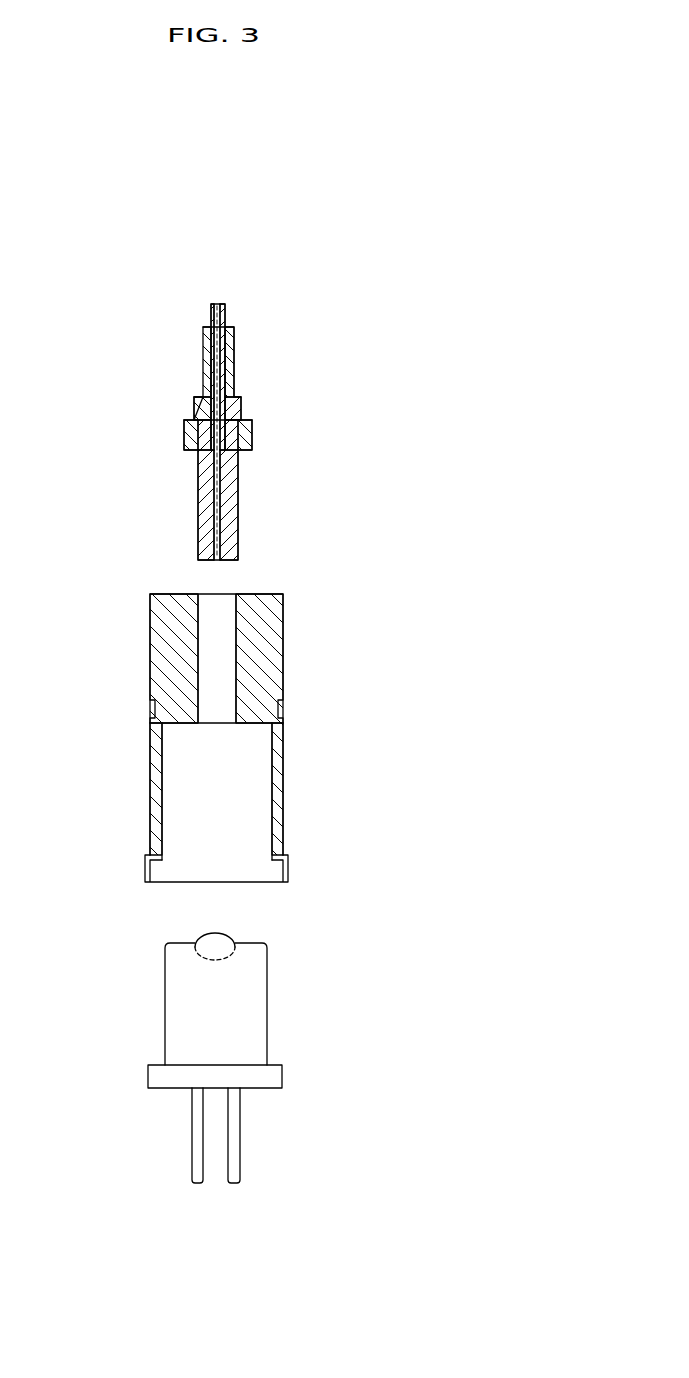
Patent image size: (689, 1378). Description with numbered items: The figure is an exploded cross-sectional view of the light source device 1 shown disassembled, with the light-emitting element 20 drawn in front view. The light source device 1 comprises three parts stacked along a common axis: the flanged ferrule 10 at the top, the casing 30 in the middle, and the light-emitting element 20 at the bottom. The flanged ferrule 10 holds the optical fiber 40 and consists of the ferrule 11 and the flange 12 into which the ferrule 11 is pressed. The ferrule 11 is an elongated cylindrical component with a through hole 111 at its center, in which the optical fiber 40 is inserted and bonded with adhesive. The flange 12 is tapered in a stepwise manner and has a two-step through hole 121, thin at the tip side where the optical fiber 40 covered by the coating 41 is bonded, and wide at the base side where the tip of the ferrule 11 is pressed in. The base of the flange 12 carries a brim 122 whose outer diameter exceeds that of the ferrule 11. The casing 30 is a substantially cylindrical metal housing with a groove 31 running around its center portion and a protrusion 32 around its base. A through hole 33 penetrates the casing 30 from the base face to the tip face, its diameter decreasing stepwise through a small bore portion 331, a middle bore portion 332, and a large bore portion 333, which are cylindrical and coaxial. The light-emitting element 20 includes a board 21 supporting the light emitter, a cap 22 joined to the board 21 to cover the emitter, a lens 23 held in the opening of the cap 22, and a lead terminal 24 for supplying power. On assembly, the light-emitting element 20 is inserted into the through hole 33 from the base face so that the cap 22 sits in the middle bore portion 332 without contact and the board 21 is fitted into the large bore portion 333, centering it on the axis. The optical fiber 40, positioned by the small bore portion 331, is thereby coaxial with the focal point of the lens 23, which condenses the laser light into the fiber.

The light source device 1 is at (377, 298).
The flanged ferrule 10 is at (88, 400).
The ferrule 11 is at (198, 533).
The through hole 111 is at (216, 527).
The flange 12 is at (194, 417).
The through hole 121 is at (252, 423).
The brim 122 is at (253, 442).
The optical fiber 40 is at (222, 500).
The coating 41 is at (226, 312).
The light-emitting element 20 is at (264, 950).
The board 21 is at (252, 1077).
The cap 22 is at (252, 1013).
The lens 23 is at (223, 948).
The lead terminal 24 is at (235, 1140).
The casing 30 is at (149, 665).
The groove 31 is at (152, 707).
The protrusion 32 is at (145, 877).
The through hole 33 is at (55, 715).
The small bore portion 331 is at (194, 713).
The middle bore portion 332 is at (159, 754).
The large bore portion 333 is at (150, 853).